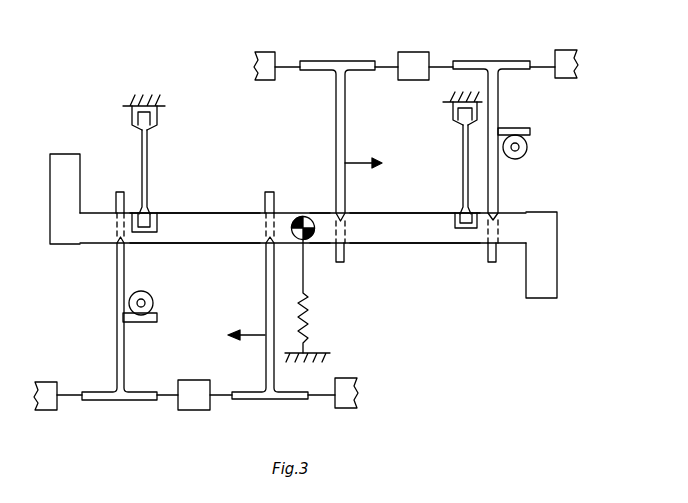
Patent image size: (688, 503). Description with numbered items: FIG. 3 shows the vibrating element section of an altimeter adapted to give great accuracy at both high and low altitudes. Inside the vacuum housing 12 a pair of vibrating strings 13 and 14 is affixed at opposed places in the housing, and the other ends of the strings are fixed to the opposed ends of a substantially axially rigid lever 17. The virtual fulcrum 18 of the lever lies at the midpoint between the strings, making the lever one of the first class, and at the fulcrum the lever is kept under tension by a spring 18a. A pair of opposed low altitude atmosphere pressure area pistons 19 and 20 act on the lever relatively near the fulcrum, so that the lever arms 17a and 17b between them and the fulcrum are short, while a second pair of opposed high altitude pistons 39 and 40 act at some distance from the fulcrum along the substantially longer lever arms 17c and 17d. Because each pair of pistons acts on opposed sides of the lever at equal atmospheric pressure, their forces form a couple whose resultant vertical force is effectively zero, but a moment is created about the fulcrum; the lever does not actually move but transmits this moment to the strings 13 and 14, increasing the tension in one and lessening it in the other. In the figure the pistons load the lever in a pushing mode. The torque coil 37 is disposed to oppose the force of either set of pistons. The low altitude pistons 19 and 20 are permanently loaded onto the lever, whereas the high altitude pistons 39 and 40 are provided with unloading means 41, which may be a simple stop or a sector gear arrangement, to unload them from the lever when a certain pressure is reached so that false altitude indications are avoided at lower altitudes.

The vacuum housing 12 is at (210, 101).
The vibrating string 13 is at (148, 155).
The vibrating string 14 is at (463, 145).
The lever 17 is at (98, 244).
The lever arm 17a is at (317, 245).
The lever arm 17b is at (285, 213).
The lever arm 17c is at (227, 245).
The lever arm 17d is at (368, 213).
The virtual fulcrum 18 is at (292, 222).
The spring 18a is at (308, 327).
The atmosphere pressure area piston 19 is at (273, 398).
The atmosphere pressure area piston 20 is at (336, 60).
The torque coil 37 is at (63, 162).
The high altitude atmosphere pressure area piston 39 is at (105, 390).
The high altitude atmosphere pressure area piston 40 is at (462, 60).
The unloading means 41 is at (153, 303).